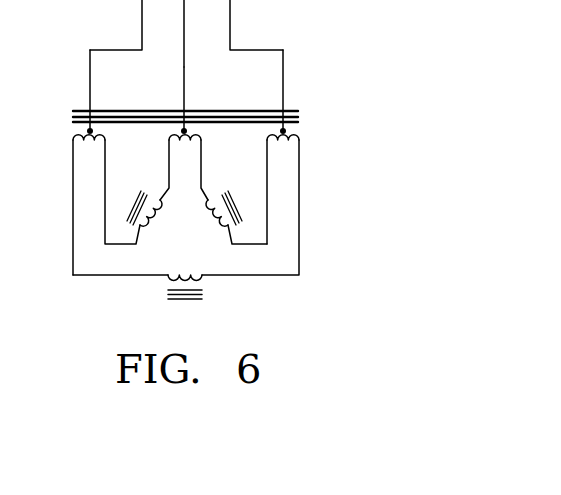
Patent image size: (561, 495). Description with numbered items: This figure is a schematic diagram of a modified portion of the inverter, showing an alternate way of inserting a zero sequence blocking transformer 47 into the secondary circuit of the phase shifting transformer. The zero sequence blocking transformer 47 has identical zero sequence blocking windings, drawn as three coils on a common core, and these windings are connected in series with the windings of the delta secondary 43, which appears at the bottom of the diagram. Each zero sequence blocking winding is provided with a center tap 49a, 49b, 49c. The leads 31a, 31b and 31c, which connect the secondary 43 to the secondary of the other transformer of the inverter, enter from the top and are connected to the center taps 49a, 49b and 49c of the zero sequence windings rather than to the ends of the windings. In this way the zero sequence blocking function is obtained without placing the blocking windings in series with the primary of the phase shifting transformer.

The lead 31a is at (184, 12).
The lead 31b is at (142, 22).
The lead 31c is at (232, 20).
The center tap 49a is at (184, 67).
The center tap 49b is at (283, 67).
The center tap 49c is at (90, 67).
The zero sequence blocking transformer 47 is at (300, 138).
The delta secondary 43 is at (222, 294).